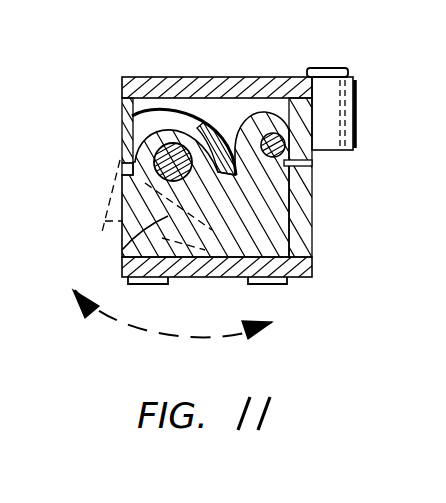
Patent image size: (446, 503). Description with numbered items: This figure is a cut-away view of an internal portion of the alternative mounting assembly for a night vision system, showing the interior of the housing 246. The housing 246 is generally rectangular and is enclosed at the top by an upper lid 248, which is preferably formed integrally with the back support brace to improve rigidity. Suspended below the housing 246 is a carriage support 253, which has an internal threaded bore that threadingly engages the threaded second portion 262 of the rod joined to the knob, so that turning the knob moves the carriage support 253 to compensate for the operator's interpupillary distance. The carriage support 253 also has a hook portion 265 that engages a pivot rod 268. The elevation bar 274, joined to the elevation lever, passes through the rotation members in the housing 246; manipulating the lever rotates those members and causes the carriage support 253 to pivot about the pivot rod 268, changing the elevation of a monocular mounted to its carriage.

The upper lid 248 is at (216, 77).
The hook portion 265 is at (270, 78).
The elevation bar 274 is at (124, 117).
The second portion of rod 262 is at (158, 160).
The carriage support 253 is at (122, 250).
The pivot rod 268 is at (285, 150).
The housing 246 is at (320, 257).